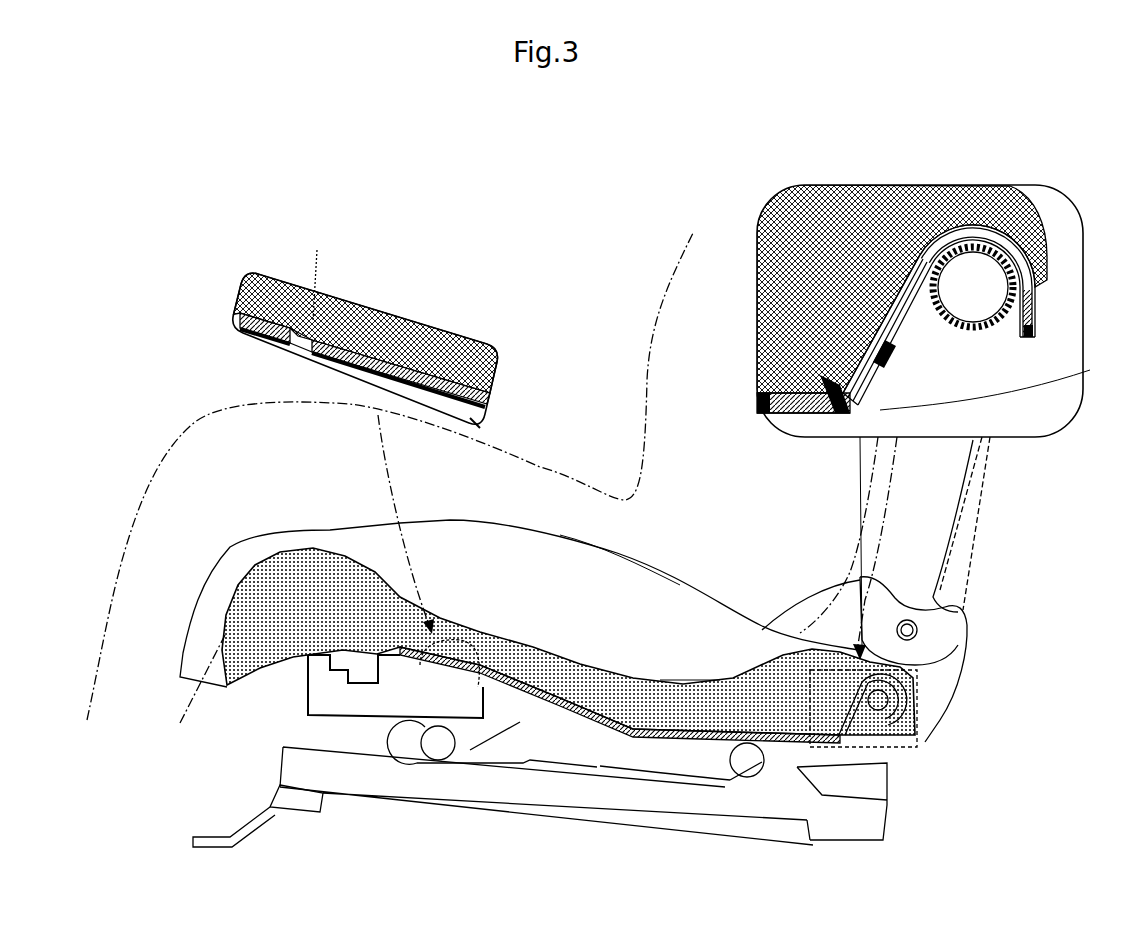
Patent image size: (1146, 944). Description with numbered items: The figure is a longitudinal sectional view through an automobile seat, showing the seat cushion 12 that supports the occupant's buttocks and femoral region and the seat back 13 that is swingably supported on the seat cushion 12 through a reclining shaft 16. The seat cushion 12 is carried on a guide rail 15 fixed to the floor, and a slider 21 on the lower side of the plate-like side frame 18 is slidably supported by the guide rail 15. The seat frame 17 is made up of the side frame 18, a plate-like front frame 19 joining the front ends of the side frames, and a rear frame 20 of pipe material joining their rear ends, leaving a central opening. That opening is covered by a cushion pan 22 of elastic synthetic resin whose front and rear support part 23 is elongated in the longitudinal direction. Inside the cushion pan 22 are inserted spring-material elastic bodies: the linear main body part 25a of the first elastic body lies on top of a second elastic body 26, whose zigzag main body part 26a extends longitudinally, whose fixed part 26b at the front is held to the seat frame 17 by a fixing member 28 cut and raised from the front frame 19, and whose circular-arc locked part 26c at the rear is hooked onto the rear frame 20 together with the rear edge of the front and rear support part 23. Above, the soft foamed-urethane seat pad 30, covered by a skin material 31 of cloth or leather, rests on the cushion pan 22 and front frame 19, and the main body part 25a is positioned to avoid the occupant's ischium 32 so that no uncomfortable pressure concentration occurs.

The seat cushion 12 is at (572, 522).
The seat back 13 is at (977, 533).
The guide rail 15 is at (503, 797).
The reclining shaft 16 is at (950, 612).
The seat frame 17 is at (340, 515).
The side frame 18 is at (630, 587).
The front frame 19 is at (300, 680).
The rear frame 20 is at (888, 715).
The slider 21 is at (590, 763).
The cushion pan 22 is at (556, 678).
The front and rear support part 23 is at (608, 738).
The main body part 25a is at (725, 750).
The second elastic body 26 is at (893, 350).
The main body part 26a is at (453, 412).
The fixed part 26b is at (310, 330).
The locked part 26c is at (840, 425).
The fixing member 28 is at (317, 273).
The seat pad 30 is at (490, 653).
The skin material 31 is at (533, 640).
The ischium 32 is at (696, 675).